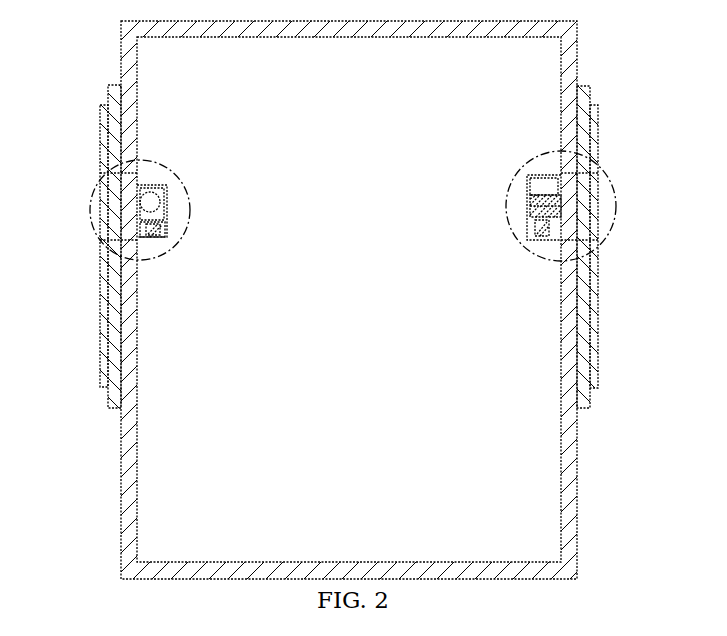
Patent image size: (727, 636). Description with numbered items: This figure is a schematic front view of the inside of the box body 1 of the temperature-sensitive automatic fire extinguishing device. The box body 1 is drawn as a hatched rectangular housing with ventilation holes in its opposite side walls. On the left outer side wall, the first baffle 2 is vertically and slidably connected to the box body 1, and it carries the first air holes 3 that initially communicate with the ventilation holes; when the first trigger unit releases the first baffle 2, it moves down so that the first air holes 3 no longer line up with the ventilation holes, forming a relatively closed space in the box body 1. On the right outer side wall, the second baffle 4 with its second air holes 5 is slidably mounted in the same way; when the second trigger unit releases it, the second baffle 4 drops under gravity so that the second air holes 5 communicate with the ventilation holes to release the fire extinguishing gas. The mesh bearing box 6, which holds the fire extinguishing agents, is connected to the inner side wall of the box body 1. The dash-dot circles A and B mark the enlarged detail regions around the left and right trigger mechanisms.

The box body 1 is at (122, 52).
The first baffle 2 is at (110, 102).
The first air holes 3 is at (113, 127).
The second baffle 4 is at (585, 97).
The second air holes 5 is at (596, 115).
The mesh bearing box 6 is at (543, 183).
The detail region A is at (92, 198).
The detail region B is at (616, 210).